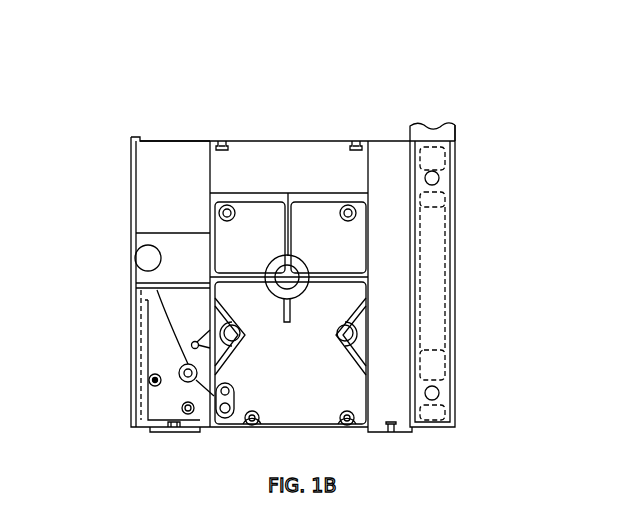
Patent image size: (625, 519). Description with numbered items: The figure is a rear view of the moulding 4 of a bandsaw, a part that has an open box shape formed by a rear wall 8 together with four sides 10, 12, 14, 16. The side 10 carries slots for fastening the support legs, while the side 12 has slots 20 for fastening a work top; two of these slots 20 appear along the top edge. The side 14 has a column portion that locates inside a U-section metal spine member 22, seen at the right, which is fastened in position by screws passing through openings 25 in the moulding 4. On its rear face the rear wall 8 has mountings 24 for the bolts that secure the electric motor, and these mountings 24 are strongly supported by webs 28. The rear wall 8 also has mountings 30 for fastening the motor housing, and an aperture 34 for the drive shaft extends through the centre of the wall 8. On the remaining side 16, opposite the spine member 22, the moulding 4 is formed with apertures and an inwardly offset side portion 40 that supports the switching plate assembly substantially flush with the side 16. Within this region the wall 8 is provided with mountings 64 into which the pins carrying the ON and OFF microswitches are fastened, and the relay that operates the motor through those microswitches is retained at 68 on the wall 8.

The moulding 4 is at (250, 165).
The rear wall 8 is at (290, 353).
The side 10 is at (228, 430).
The side 12 is at (282, 141).
The side 14 is at (432, 328).
The side 16 is at (136, 233).
The slots 20 is at (222, 141).
The spine member 22 is at (445, 125).
The mountings 24 is at (356, 323).
The openings 25 is at (440, 178).
The webs 28 is at (356, 352).
The mountings 30 is at (356, 213).
The aperture 34 is at (290, 277).
The inwardly offset side portion 40 is at (142, 350).
The mountings 64 is at (150, 383).
The relay retention location 68 is at (190, 310).